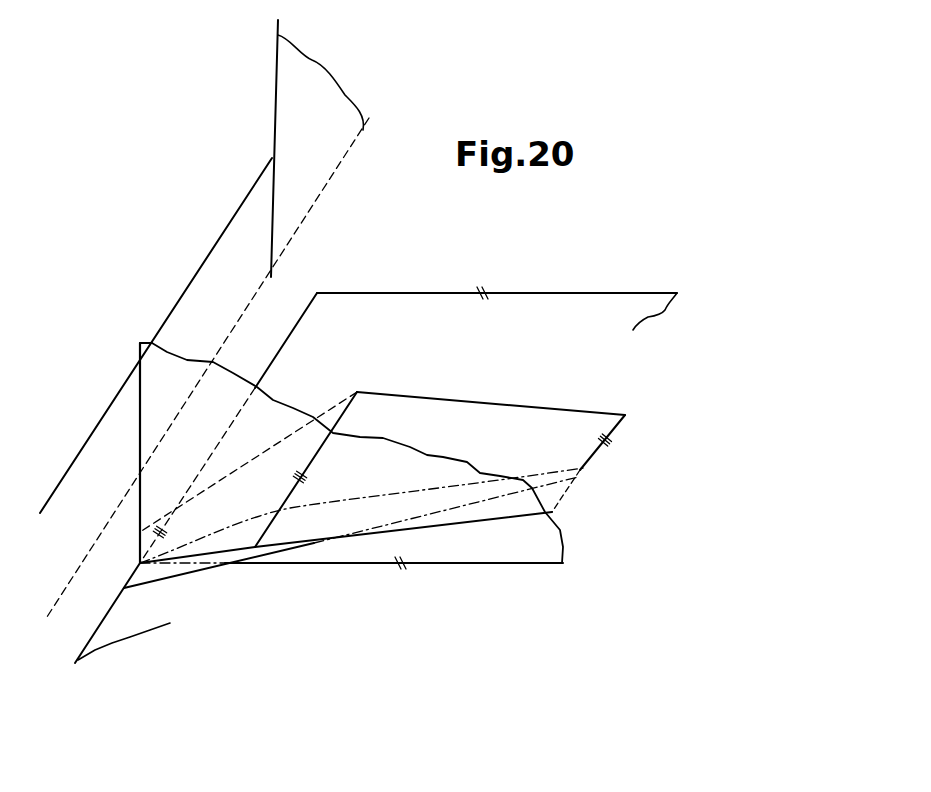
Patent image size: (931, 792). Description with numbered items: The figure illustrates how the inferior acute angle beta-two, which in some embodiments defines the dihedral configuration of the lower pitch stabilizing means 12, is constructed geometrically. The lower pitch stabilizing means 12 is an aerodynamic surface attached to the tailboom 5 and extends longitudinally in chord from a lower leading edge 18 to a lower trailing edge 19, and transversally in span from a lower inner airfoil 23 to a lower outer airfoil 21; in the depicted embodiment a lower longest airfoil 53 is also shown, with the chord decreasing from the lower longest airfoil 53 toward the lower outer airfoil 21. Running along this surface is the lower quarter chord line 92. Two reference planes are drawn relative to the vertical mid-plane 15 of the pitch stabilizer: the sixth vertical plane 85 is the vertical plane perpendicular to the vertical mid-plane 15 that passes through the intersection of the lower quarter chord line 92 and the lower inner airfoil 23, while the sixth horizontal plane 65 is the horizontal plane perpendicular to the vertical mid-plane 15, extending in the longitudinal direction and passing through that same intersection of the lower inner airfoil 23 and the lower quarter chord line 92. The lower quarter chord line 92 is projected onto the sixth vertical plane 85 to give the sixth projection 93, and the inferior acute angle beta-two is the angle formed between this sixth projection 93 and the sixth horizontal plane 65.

The tailboom 5 is at (115, 435).
The lower pitch stabilizing means 12 is at (608, 506).
The vertical mid-plane 15 is at (310, 88).
The lower leading edge 18 is at (176, 580).
The lower trailing edge 19 is at (275, 447).
The lower outer airfoil 21 is at (618, 429).
The lower inner airfoil 23 is at (170, 513).
The lower longest airfoil 53 is at (315, 455).
The sixth horizontal plane 65 is at (643, 300).
The sixth vertical plane 85 is at (162, 368).
The lower quarter chord line 92 is at (212, 537).
The sixth projection 93 is at (283, 543).